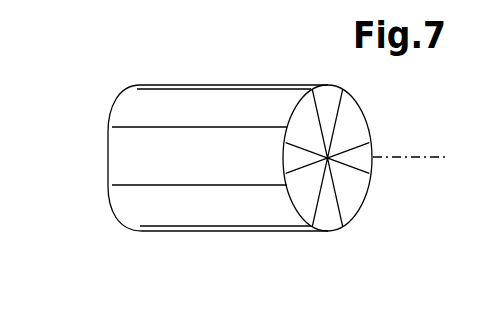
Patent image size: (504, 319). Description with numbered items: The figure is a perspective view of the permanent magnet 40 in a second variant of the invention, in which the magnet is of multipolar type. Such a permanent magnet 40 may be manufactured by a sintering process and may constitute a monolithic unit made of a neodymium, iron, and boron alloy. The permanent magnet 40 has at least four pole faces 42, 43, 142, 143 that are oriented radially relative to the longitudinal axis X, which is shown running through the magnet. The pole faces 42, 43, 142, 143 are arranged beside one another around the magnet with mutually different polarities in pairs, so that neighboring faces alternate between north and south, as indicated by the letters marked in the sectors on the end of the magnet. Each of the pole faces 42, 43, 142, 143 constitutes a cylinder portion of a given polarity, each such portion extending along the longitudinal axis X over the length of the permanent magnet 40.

The permanent magnet 40 is at (97, 101).
The pole face 42 is at (273, 86).
The pole face 43 is at (168, 103).
The pole face 142 is at (170, 165).
The pole face 143 is at (239, 217).